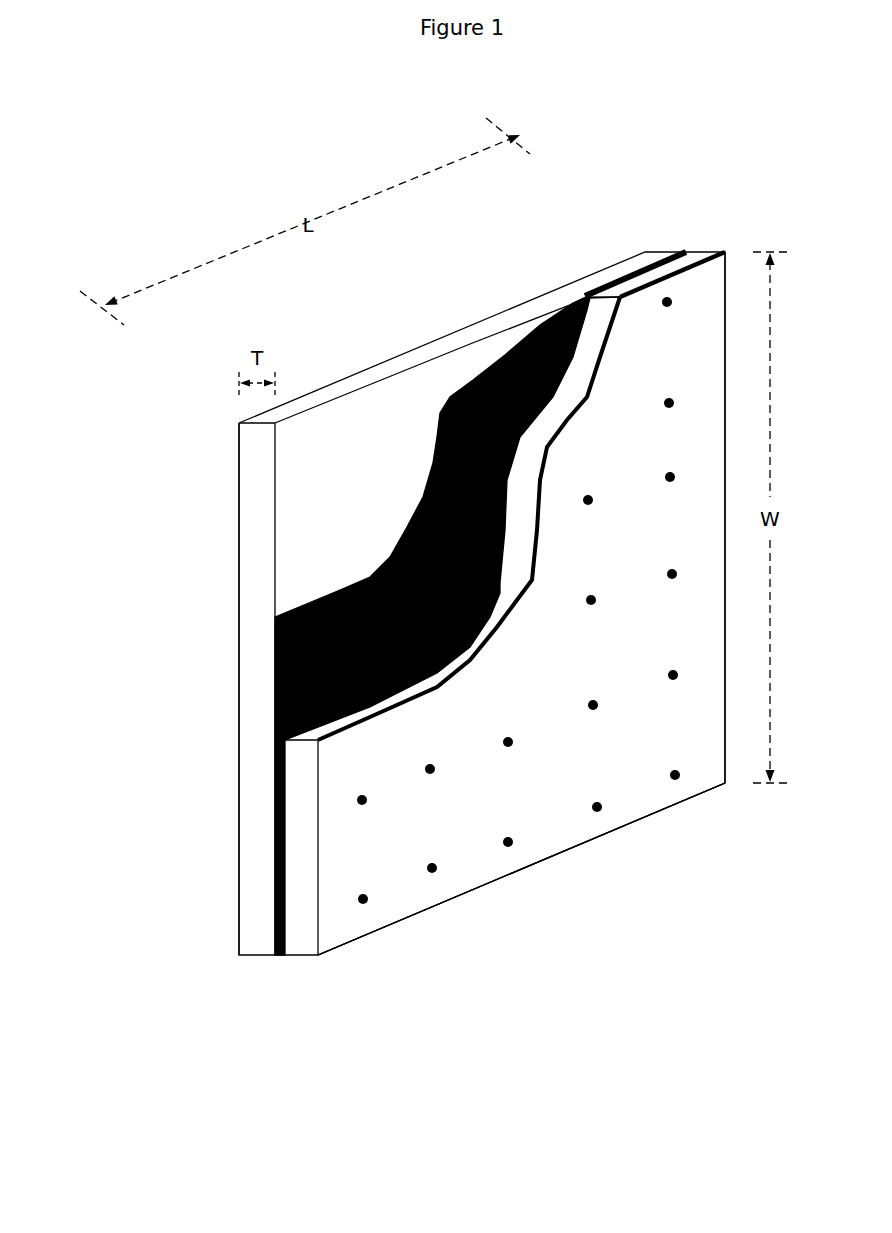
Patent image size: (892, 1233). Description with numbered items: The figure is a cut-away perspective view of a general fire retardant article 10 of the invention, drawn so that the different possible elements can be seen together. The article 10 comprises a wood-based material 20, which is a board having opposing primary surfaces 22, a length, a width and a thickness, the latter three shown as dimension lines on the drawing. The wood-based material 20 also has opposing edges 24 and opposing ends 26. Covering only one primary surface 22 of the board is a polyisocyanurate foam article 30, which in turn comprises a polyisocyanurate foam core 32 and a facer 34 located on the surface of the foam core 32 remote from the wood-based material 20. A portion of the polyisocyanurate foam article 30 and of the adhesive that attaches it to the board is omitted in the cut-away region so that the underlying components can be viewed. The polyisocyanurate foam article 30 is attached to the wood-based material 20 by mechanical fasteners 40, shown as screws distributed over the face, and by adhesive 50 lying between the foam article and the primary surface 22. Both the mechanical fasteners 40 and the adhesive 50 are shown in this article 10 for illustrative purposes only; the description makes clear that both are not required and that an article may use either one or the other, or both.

The article 10 is at (487, 262).
The wood-based material 20 is at (343, 390).
The primary surfaces 22 is at (338, 555).
The edges 24 is at (402, 360).
The ends 26 is at (683, 240).
The polyisocyanurate foam article 30 is at (521, 603).
The polyisocyanurate foam core 32 is at (300, 920).
The facer 34 is at (521, 869).
The mechanical fasteners 40 is at (675, 775).
The adhesive 50 is at (342, 626).